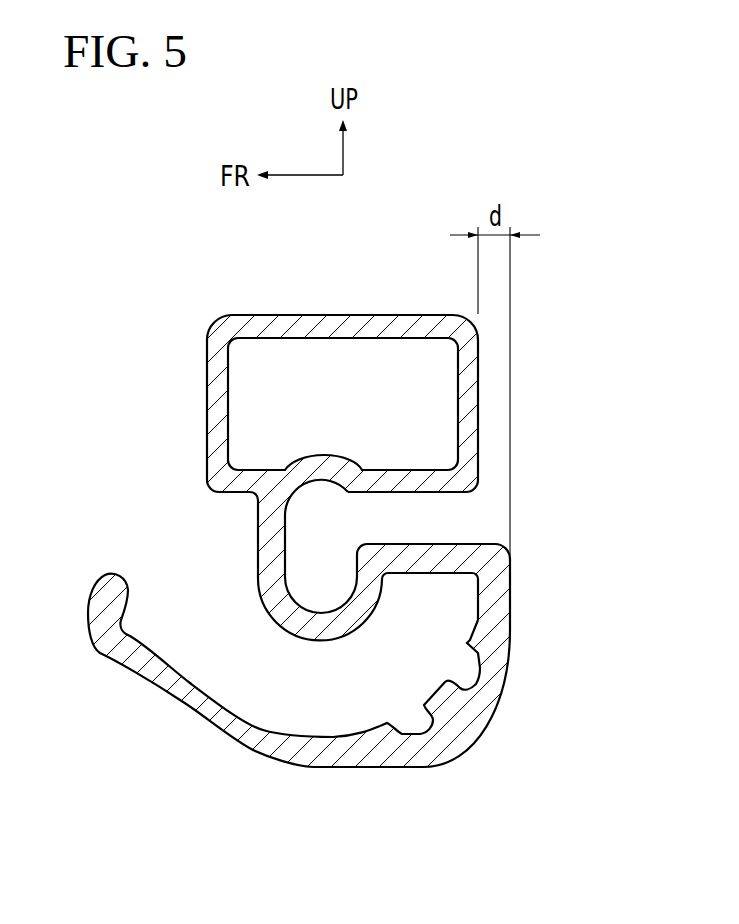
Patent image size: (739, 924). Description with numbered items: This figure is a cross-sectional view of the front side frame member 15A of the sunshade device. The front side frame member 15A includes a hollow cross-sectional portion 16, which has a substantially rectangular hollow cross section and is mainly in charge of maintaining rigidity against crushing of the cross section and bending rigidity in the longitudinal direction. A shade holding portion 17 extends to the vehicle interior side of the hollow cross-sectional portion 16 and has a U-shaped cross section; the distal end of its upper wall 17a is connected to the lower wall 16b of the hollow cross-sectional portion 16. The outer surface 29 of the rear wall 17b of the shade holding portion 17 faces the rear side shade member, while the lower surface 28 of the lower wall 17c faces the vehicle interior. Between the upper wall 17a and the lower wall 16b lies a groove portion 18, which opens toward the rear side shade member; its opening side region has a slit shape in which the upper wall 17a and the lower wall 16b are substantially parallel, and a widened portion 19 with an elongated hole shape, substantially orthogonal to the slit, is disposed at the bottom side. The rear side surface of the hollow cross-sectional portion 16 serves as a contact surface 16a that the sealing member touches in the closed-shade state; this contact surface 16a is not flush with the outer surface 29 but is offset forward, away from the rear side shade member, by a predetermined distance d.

The front side frame member 15A is at (380, 215).
The hollow cross-sectional portion 16 is at (283, 308).
The contact surface 16a is at (480, 387).
The lower wall 16b is at (411, 476).
The shade holding portion 17 is at (474, 757).
The upper wall 17a is at (435, 557).
The rear wall 17b is at (497, 620).
The lower wall 17c is at (343, 752).
The groove portion 18 is at (421, 493).
The widened portion 19 is at (316, 480).
The lower surface 28 is at (375, 767).
The outer surface 29 is at (511, 657).